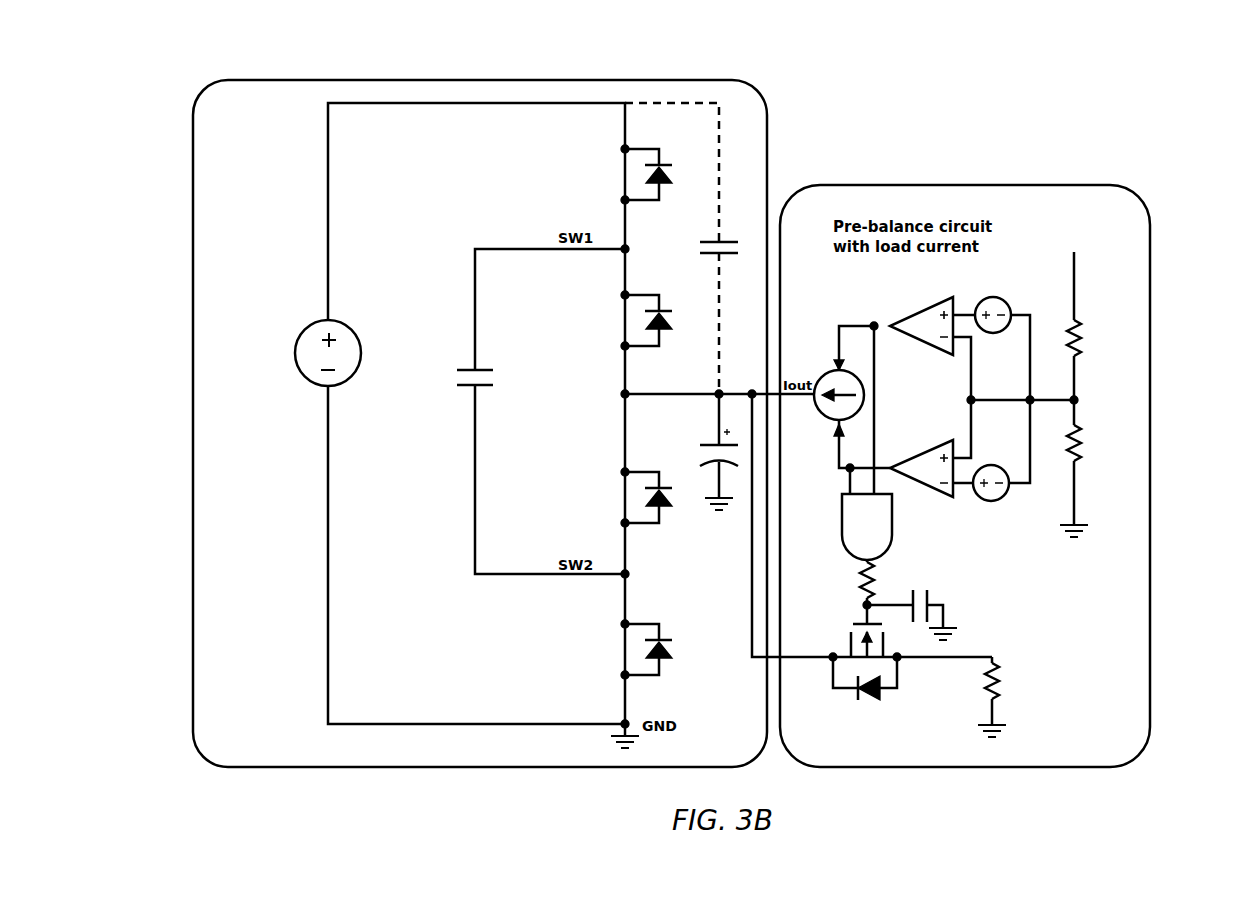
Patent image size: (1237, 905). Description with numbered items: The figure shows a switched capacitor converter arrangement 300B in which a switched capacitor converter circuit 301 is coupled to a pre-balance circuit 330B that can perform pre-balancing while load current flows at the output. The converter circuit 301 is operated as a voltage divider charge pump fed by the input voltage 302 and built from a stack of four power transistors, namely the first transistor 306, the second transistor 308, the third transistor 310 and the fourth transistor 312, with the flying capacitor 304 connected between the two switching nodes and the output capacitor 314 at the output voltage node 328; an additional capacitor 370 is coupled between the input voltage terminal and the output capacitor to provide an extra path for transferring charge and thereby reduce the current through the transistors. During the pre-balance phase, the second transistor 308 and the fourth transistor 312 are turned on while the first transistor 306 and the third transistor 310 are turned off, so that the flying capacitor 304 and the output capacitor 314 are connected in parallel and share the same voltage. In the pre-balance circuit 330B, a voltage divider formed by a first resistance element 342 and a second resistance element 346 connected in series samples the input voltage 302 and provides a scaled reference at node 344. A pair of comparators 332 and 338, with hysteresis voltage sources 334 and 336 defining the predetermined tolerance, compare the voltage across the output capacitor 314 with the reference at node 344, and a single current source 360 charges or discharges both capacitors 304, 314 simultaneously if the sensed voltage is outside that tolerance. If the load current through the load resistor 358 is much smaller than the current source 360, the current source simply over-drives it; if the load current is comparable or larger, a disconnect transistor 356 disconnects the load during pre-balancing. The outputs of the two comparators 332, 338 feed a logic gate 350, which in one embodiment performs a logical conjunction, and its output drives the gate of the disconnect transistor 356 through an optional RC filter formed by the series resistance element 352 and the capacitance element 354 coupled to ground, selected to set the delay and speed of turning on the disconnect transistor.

The switched capacitor converter circuit coupled to pre-balance circuit 300B is at (236, 45).
The switched capacitor converter circuit 301 is at (668, 80).
The input voltage V_IN 302 is at (300, 368).
The capacitor C_FLY 304 is at (455, 360).
The transistor Q1 306 is at (612, 170).
The transistor Q2 308 is at (608, 342).
The transistor Q3 310 is at (607, 474).
The transistor Q4 312 is at (610, 676).
The output capacitor C_OUT 314 is at (708, 472).
The output voltage V_OUT 328 is at (633, 394).
The pre-balance circuit 330B is at (1045, 185).
The comparator 332 is at (940, 305).
The hysteresis voltage source 334 is at (978, 300).
The hysteresis voltage source 336 is at (985, 498).
The comparator 338 is at (945, 450).
The first resistance element 342 is at (1087, 330).
The node 344 is at (1077, 390).
The second resistance element 346 is at (1087, 448).
The logic gate 350 is at (880, 548).
The series resistance element Rg 352 is at (858, 578).
The capacitance element Cg 354 is at (935, 605).
The disconnect FET QD 356 is at (845, 640).
The load resistor R_LOAD 358 is at (1000, 670).
The current source 360 is at (812, 372).
The capacitor C_OPT 370 is at (740, 238).